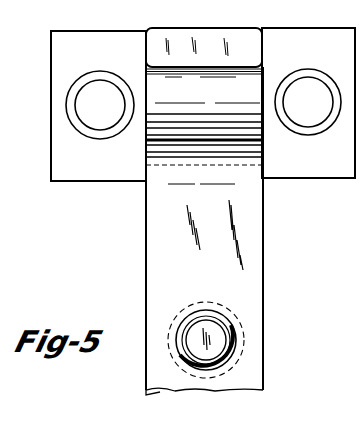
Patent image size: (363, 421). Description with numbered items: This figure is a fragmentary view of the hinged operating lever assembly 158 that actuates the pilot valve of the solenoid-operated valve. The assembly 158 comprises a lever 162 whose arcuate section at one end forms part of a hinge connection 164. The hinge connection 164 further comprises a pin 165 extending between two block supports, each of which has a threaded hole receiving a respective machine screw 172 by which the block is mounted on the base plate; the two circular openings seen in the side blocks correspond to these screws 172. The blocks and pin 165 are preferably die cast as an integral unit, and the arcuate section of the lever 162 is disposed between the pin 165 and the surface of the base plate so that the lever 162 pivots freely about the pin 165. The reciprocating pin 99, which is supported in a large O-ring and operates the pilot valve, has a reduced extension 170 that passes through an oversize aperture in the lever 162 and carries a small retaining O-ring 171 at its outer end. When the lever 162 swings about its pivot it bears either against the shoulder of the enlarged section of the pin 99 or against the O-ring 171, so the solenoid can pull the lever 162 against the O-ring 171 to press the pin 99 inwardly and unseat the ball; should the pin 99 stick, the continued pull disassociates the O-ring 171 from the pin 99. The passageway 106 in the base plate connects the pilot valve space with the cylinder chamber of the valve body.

The reciprocating pin 99 is at (192, 372).
The passageway 106 is at (298, 418).
The hinged operating lever assembly 158 is at (277, 294).
The lever 162 is at (80, 181).
The hinge connection 164 is at (134, 201).
The pin 165 is at (244, 90).
The reduced extension 170 is at (210, 338).
The retaining O-ring 171 is at (207, 317).
The machine screw 172 is at (90, 125).